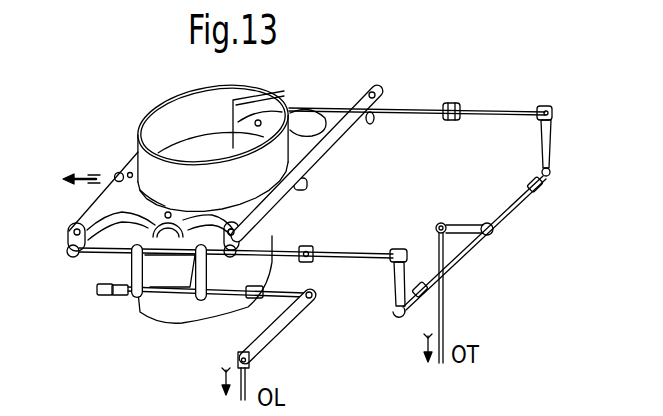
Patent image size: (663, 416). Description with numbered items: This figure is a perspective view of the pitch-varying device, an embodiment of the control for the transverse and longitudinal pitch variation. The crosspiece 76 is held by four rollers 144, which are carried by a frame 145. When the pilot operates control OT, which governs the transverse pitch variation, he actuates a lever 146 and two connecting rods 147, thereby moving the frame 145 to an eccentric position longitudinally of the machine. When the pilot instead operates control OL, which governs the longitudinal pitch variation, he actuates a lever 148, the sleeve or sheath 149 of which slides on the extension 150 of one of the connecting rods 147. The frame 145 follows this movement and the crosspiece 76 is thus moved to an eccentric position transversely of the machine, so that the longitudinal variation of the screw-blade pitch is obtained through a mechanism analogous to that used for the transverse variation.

The crosspiece 76 is at (180, 110).
The rollers 144 is at (273, 118).
The frame 145 is at (304, 160).
The lever 146 is at (541, 150).
The connecting rods 147 is at (480, 112).
The lever 148 is at (195, 299).
The sleeve or sheath 149 is at (170, 251).
The extension 150 is at (100, 245).